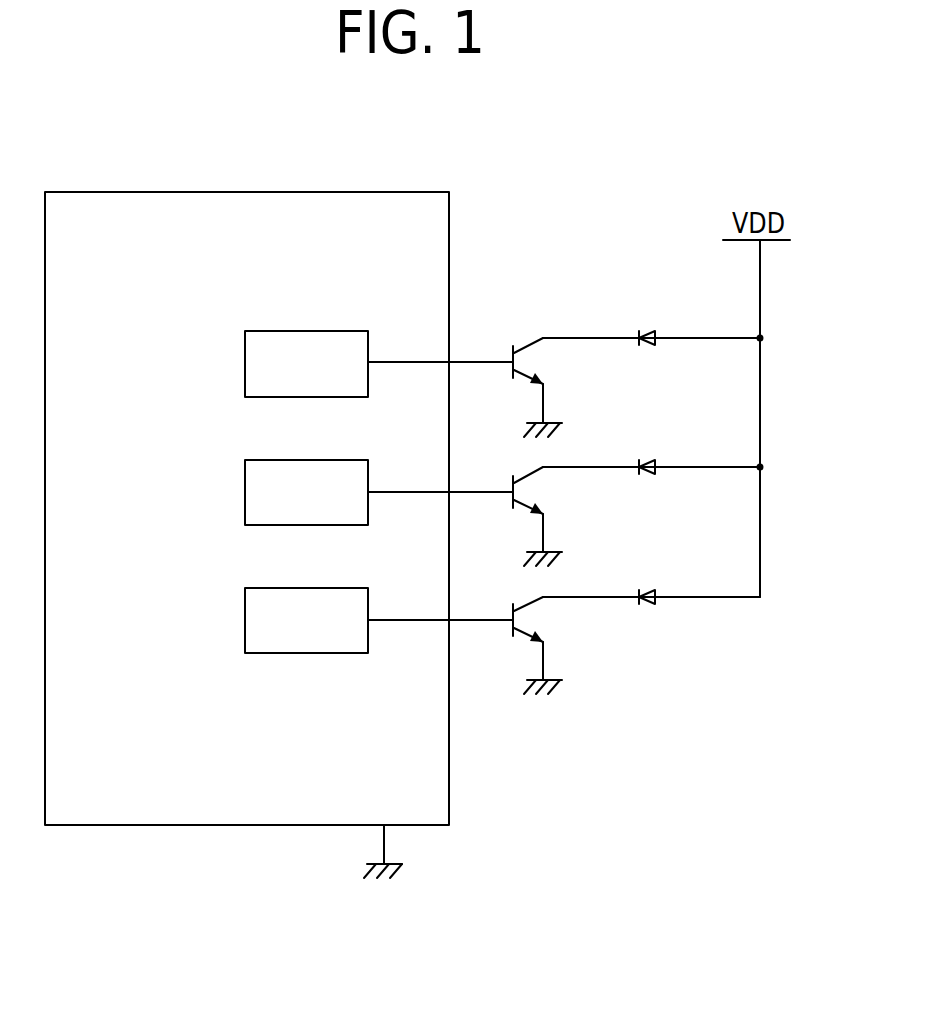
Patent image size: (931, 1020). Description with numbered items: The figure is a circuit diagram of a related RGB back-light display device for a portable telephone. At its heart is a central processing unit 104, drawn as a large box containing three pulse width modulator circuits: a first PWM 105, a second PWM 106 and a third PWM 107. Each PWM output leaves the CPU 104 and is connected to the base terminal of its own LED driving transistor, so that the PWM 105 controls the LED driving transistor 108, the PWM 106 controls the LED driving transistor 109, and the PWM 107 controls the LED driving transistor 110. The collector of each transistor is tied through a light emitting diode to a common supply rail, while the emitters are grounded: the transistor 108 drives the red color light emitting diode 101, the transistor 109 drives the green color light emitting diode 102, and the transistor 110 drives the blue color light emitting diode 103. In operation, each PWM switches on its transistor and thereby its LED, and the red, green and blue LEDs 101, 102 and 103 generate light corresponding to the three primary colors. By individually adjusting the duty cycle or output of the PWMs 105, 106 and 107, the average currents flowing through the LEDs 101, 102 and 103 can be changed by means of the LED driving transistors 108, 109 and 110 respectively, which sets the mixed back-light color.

The red color light emitting diode 101 is at (644, 330).
The green color light emitting diode 102 is at (644, 459).
The blue color light emitting diode 103 is at (644, 589).
The central processing unit 104 is at (207, 192).
The pulse width modulator circuit 105 is at (287, 331).
The pulse width modulator circuit 106 is at (287, 460).
The pulse width modulator circuit 107 is at (287, 588).
The LED driving transistor 108 is at (560, 359).
The LED driving transistor 109 is at (560, 489).
The LED driving transistor 110 is at (560, 619).